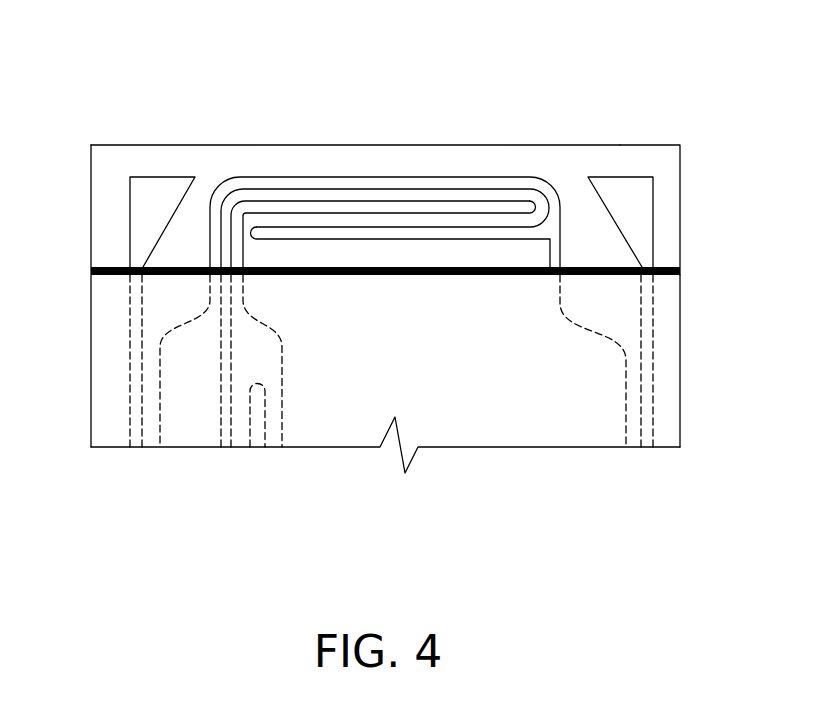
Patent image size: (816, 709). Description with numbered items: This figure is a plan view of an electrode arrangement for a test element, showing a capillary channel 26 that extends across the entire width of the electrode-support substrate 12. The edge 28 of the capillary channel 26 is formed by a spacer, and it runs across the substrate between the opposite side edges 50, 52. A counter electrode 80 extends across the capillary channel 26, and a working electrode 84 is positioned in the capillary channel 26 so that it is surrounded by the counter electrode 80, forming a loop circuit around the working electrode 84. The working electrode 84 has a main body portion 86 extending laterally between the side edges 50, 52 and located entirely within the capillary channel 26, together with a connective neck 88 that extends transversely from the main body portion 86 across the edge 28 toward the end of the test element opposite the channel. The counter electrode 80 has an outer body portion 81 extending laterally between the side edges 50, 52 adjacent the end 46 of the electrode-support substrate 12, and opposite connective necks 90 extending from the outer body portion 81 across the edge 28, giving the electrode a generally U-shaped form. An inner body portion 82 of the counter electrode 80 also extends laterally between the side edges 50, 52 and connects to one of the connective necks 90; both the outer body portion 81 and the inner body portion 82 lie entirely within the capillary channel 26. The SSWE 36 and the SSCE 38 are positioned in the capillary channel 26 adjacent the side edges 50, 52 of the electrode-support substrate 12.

The electrode-support substrate 12 is at (688, 408).
The capillary channel 26 is at (692, 144).
The edge of the capillary channel 28 is at (667, 273).
The SSWE 36 is at (143, 177).
The SSCE 38 is at (640, 177).
The end of the electrode-support substrate 46 is at (620, 145).
The side edge of the electrode-support substrate 50 is at (91, 378).
The side edge of the electrode-support substrate 52 is at (680, 347).
The counter electrode 80 is at (250, 160).
The outer body portion 81 is at (277, 176).
The inner body portion 82 is at (290, 239).
The working electrode 84 is at (459, 194).
The main body portion 86 is at (408, 201).
The connective neck 88 is at (230, 230).
The connective necks 90 is at (210, 245).